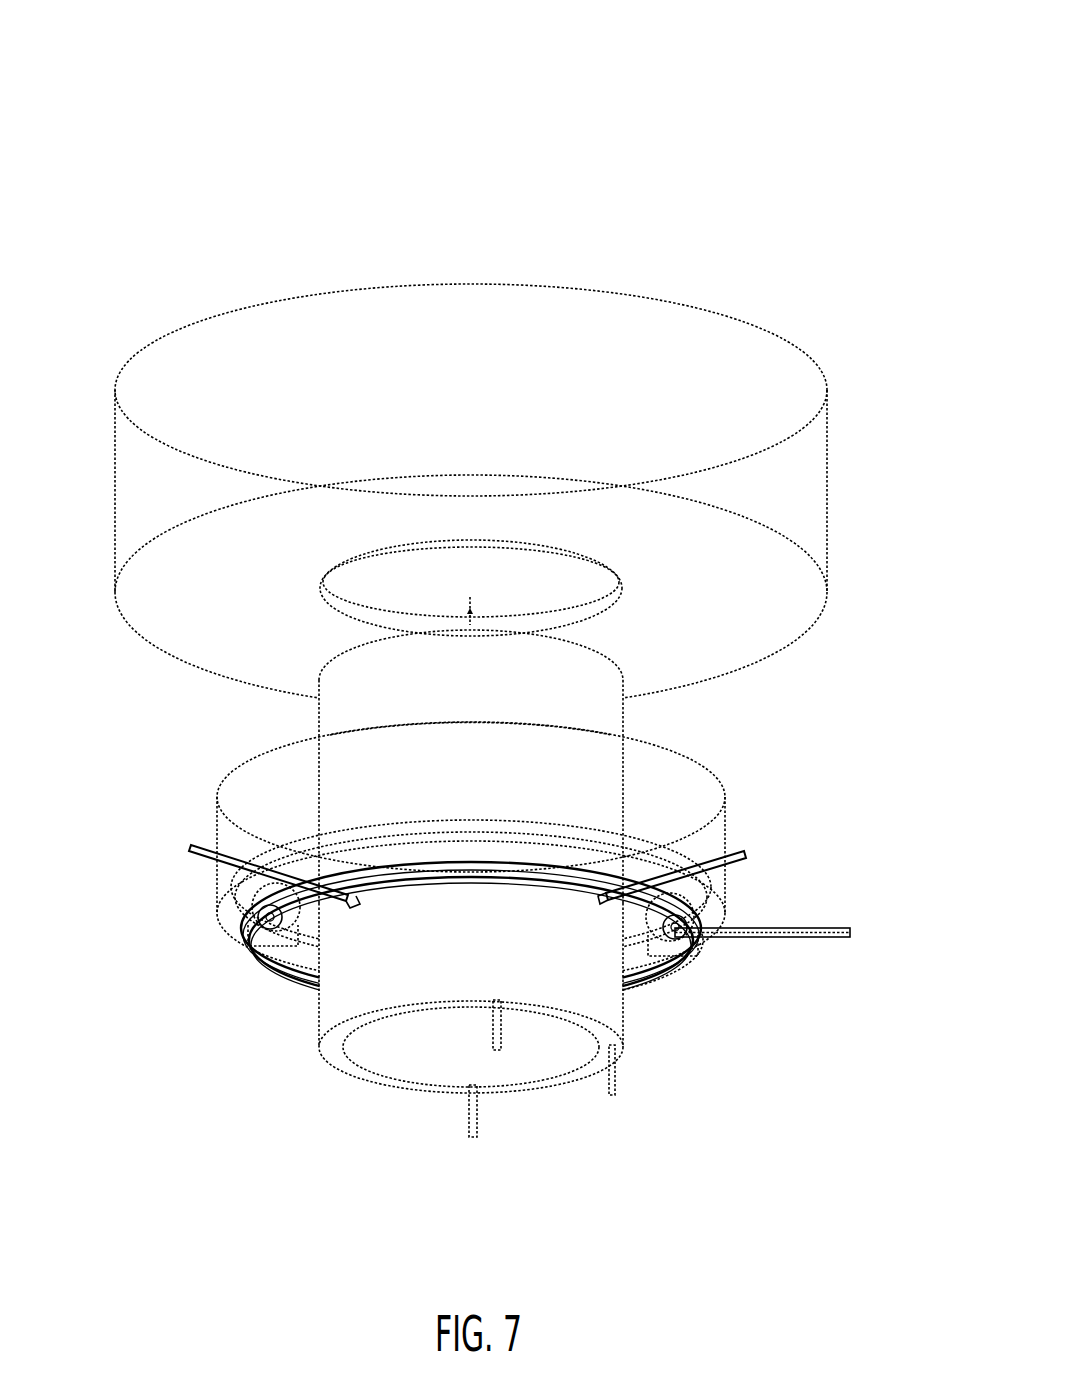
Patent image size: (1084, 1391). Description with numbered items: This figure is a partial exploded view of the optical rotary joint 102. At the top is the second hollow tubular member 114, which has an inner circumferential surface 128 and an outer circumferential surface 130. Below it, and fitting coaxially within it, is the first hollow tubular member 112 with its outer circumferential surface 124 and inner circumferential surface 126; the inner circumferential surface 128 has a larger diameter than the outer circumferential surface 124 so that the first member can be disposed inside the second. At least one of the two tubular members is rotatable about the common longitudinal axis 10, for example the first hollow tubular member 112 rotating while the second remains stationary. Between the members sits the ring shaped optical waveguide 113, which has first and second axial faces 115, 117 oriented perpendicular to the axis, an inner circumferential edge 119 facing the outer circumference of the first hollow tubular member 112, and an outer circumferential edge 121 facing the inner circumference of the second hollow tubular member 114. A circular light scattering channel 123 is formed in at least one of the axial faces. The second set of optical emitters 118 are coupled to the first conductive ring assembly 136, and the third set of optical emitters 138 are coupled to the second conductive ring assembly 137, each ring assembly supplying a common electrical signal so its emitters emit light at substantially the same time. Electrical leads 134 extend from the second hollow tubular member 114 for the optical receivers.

The optical rotary joint 102 is at (128, 76).
The second hollow tubular member 114 is at (176, 357).
The outer circumferential surface 130 is at (803, 505).
The inner circumferential surface 128 is at (352, 613).
The common longitudinal axis 10 is at (495, 602).
The first hollow tubular member 112 is at (345, 726).
The ring shaped optical waveguide 113 is at (696, 795).
The second axial face 117 is at (663, 752).
The outer circumferential edge 121 is at (215, 830).
The circular light scattering channel 123 is at (551, 842).
The first axial face 115 is at (232, 920).
The second conductive ring assembly 137 is at (700, 912).
The electrical leads 134 is at (843, 927).
The third set of optical emitters 138 is at (261, 922).
The inner circumferential edge 119 is at (305, 937).
The second set of optical emitters 118 is at (681, 928).
The first conductive ring assembly 136 is at (636, 965).
The outer circumferential surface 124 is at (335, 1068).
The inner circumferential surface 126 is at (416, 1092).